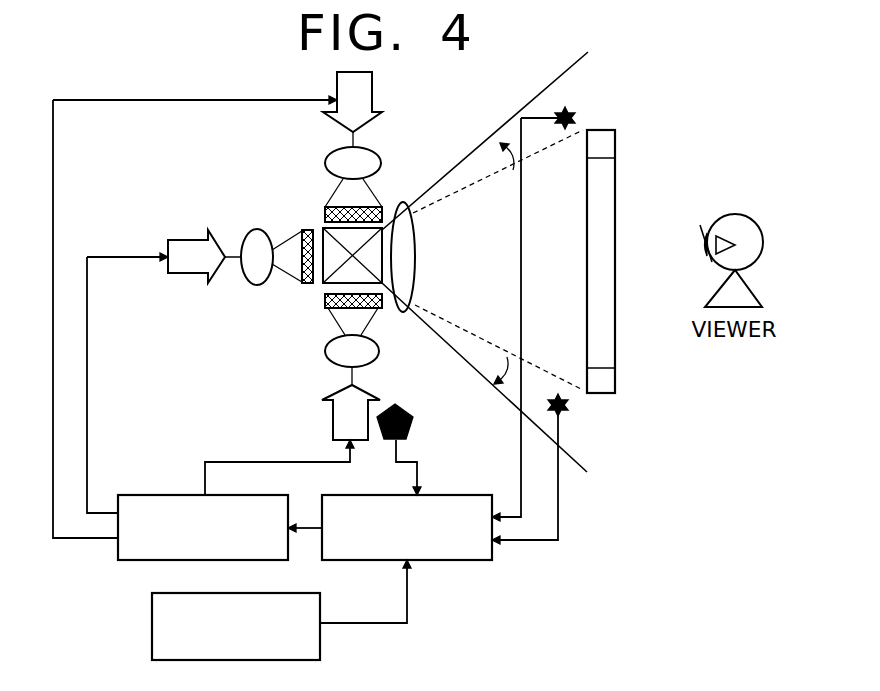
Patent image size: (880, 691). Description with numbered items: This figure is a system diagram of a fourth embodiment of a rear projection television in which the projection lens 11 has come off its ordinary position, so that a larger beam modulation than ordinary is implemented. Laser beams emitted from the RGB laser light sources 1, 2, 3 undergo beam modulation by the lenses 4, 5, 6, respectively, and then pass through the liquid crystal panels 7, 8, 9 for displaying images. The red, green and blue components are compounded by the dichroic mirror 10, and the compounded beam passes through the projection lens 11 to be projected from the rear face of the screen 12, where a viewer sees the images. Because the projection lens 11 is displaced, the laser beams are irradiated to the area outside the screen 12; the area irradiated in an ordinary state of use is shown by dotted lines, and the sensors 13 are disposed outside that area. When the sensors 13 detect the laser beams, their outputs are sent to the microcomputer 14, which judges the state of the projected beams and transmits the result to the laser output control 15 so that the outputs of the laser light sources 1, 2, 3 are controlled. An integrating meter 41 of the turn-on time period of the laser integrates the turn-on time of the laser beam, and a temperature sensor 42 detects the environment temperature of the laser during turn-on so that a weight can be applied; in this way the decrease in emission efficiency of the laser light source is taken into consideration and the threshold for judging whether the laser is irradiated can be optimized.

The laser light source 1 is at (185, 240).
The laser light source 2 is at (373, 95).
The laser light source 3 is at (328, 417).
The lens 4 is at (256, 228).
The lens 5 is at (366, 150).
The lens 6 is at (327, 356).
The liquid crystal panel 7 is at (306, 229).
The liquid crystal panel 8 is at (381, 207).
The liquid crystal panel 9 is at (372, 308).
The dichroic mirror 10 is at (345, 270).
The projection lens 11 is at (417, 255).
The screen 12 is at (616, 380).
The sensors 13 is at (572, 112).
The microcomputer 14 is at (465, 495).
The laser output control 15 is at (168, 495).
The integrating meter of turn-on time period of the laser 41 is at (152, 620).
The temperature sensor 42 is at (408, 412).